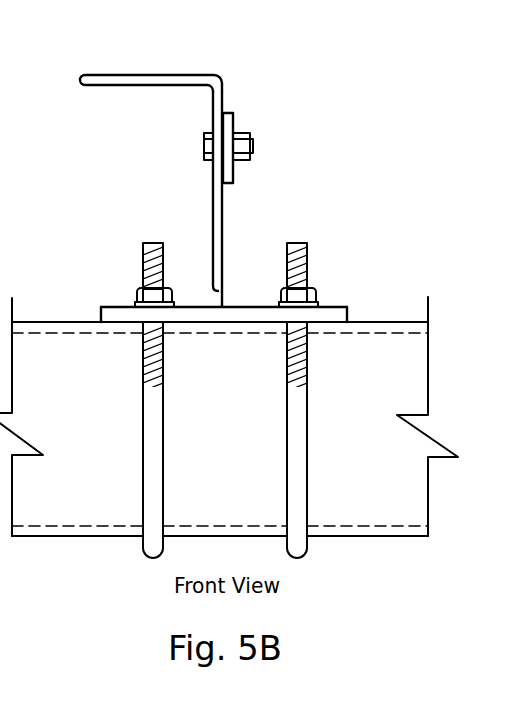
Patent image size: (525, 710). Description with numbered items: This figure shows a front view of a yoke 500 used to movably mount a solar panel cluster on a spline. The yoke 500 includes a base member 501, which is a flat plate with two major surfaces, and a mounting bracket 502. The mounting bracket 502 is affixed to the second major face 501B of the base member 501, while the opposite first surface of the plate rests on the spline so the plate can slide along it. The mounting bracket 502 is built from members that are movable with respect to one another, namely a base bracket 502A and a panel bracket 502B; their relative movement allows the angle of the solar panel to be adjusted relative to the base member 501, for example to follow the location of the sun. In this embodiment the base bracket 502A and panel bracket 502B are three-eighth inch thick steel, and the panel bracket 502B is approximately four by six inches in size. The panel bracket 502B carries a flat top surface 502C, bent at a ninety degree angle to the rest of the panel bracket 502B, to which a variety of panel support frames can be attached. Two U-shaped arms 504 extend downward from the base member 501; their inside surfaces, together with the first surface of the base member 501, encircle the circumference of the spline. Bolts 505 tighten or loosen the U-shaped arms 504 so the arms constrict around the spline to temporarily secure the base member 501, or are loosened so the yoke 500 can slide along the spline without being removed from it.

The yoke 500 is at (341, 76).
The base member 501 is at (211, 280).
The second major face 501B is at (118, 305).
The mounting bracket 502 is at (142, 166).
The base bracket 502A is at (233, 183).
The panel bracket 502B is at (213, 117).
The top surface 502C is at (159, 75).
The U-shaped arms 504 is at (292, 462).
The bolts 505 is at (301, 243).